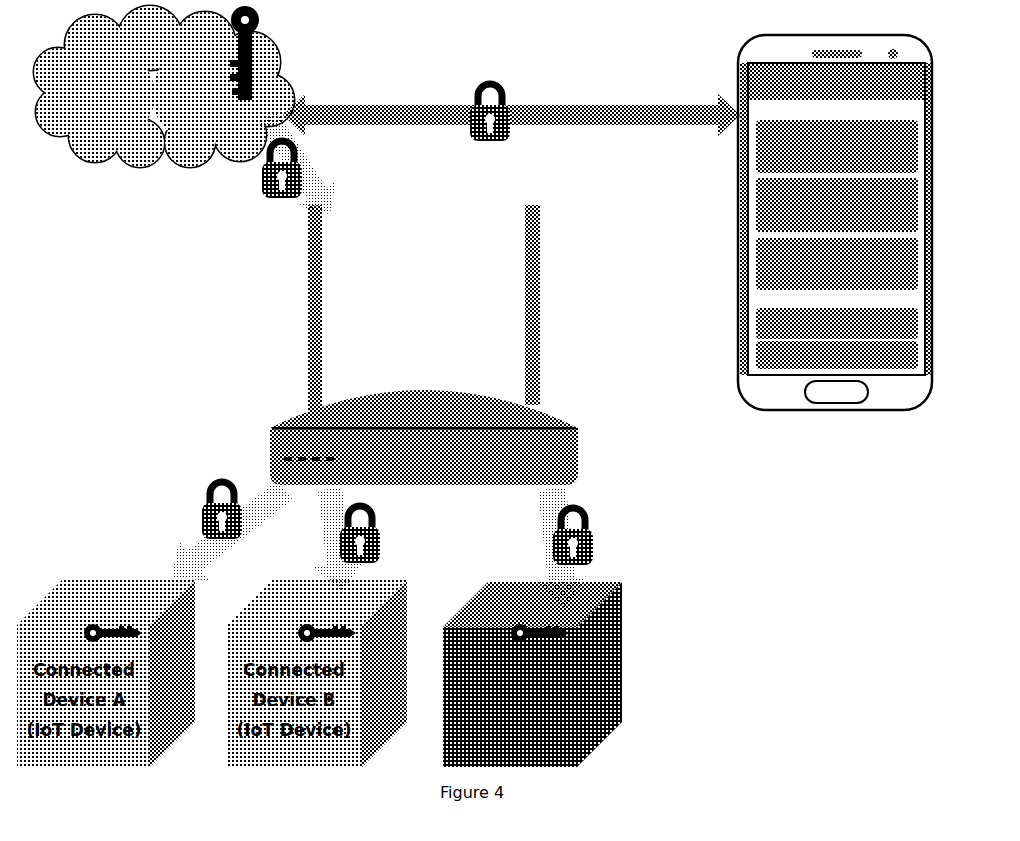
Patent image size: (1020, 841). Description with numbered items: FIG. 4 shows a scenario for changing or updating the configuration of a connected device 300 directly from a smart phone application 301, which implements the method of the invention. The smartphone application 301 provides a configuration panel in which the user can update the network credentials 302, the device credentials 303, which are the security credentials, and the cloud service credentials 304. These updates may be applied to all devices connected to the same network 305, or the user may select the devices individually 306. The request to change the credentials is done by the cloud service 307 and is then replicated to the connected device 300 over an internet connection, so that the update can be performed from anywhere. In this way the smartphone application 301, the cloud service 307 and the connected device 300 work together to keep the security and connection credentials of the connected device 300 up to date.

The connected device 300 is at (628, 648).
The smart phone application 301 is at (778, 221).
The network credentials 302 is at (750, 150).
The device credentials 303 is at (750, 205).
The cloud service credentials 304 is at (750, 262).
The all devices connected to the same network 305 is at (750, 322).
The select devices individually 306 is at (750, 352).
The cloud service 307 is at (292, 88).